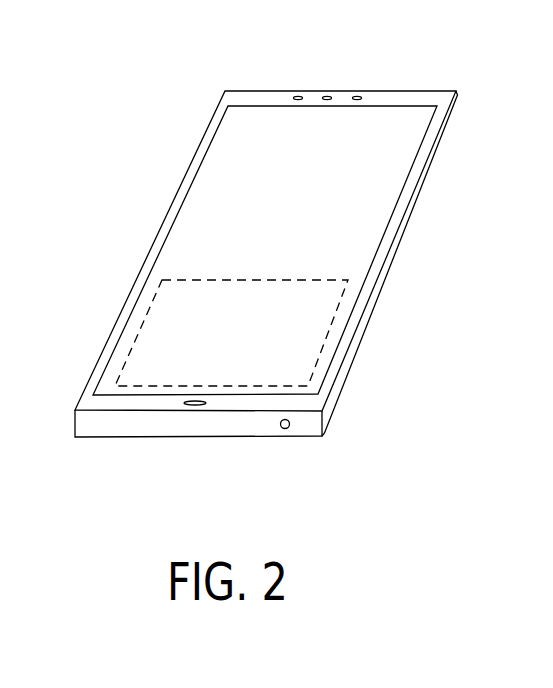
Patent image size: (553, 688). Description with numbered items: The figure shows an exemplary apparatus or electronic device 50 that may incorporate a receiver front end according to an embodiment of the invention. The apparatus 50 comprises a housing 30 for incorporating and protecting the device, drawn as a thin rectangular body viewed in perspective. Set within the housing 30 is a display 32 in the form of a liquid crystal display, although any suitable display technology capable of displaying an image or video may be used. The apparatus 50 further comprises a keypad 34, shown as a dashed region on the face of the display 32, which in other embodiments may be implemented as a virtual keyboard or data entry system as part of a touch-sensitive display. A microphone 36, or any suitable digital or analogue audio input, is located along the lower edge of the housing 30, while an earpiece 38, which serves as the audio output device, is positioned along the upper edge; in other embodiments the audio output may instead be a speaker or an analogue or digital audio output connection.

The electronic device 50 is at (308, 251).
The housing 30 is at (239, 91).
The display 32 is at (375, 194).
The keypad 34 is at (312, 348).
The microphone 36 is at (195, 406).
The earpiece 38 is at (327, 96).